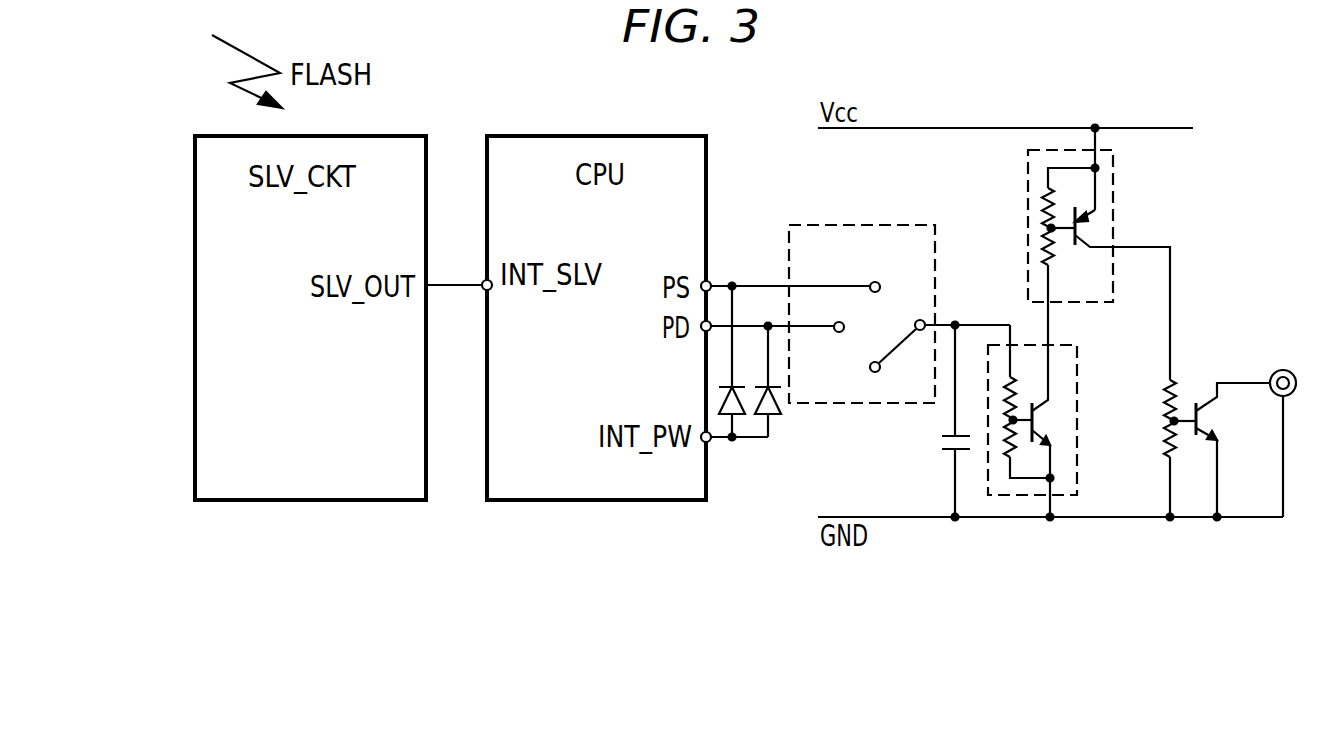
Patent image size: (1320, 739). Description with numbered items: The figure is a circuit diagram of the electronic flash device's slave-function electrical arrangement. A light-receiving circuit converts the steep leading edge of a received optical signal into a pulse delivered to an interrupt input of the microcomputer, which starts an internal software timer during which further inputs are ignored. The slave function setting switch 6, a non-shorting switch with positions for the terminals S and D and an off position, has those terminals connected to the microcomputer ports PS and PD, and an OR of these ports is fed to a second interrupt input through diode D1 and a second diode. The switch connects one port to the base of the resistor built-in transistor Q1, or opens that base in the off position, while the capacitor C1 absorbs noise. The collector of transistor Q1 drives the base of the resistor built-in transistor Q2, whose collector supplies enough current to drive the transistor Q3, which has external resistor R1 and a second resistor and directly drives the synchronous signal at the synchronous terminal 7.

The slave function setting switch 6 is at (877, 222).
The synchronous terminal 7 is at (1285, 370).
The diode D1 is at (753, 382).
The capacitor C1 is at (937, 421).
The resistor built-in transistor Q1 is at (1049, 393).
The resistor built-in transistor Q2 is at (1099, 253).
The transistor Q3 is at (1233, 452).
The resistor R1 is at (1163, 450).